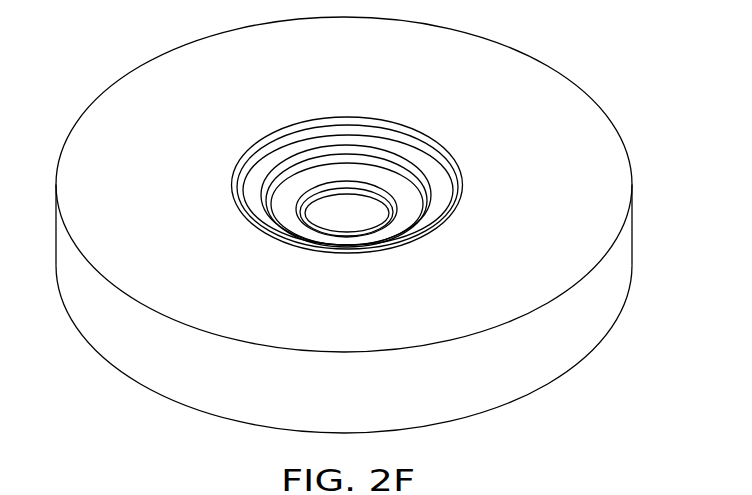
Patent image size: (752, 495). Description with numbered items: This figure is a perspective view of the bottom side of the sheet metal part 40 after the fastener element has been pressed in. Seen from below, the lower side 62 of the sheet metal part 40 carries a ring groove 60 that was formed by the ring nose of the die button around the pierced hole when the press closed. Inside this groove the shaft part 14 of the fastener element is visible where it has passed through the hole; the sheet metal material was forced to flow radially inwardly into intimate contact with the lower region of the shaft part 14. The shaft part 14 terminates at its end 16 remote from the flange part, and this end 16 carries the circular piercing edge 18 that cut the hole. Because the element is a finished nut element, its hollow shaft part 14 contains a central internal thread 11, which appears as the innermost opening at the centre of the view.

The sheet metal part 40 is at (633, 240).
The lower side 62 is at (189, 190).
The ring groove 60 is at (263, 170).
The shaft part 14 is at (310, 175).
The circular piercing edge 18 is at (352, 154).
The end 16 is at (388, 178).
The internal thread 11 is at (324, 199).